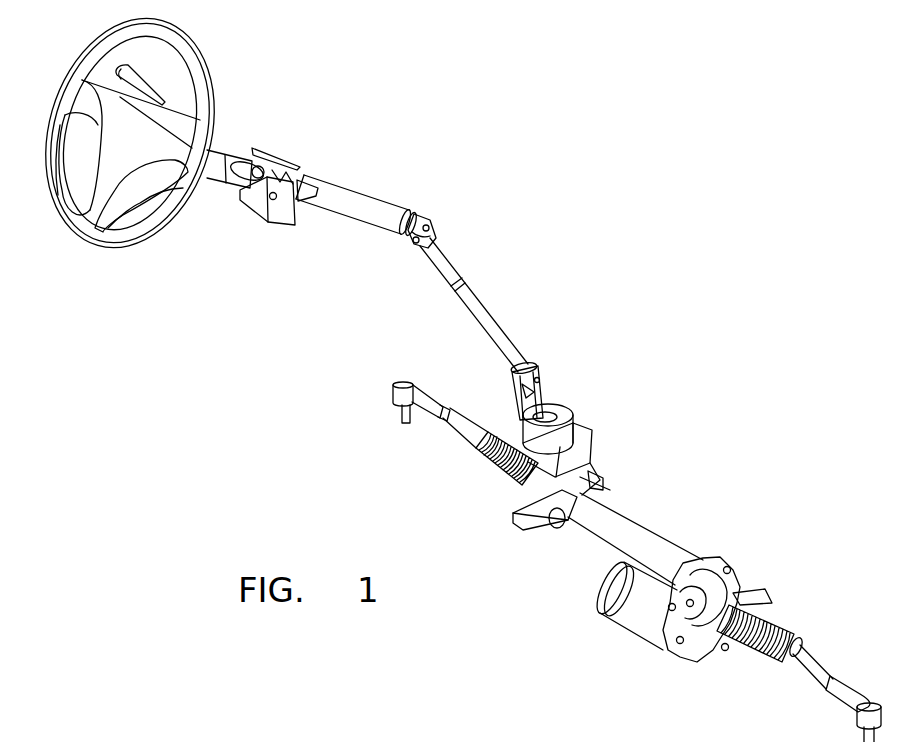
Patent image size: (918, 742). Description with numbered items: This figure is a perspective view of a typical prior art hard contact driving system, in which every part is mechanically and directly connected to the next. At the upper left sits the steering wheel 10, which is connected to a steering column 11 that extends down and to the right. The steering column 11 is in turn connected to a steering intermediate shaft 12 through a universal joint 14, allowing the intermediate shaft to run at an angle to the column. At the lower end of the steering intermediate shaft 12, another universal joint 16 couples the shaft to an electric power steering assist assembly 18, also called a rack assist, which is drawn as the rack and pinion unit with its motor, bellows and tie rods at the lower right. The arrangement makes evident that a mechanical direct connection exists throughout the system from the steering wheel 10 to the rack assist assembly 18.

The steering wheel 10 is at (207, 70).
The steering column 11 is at (340, 190).
The steering intermediate shaft 12 is at (482, 305).
The universal joint 14 is at (430, 222).
The universal joint 16 is at (545, 390).
The electric power steering assist assembly 18 is at (622, 460).